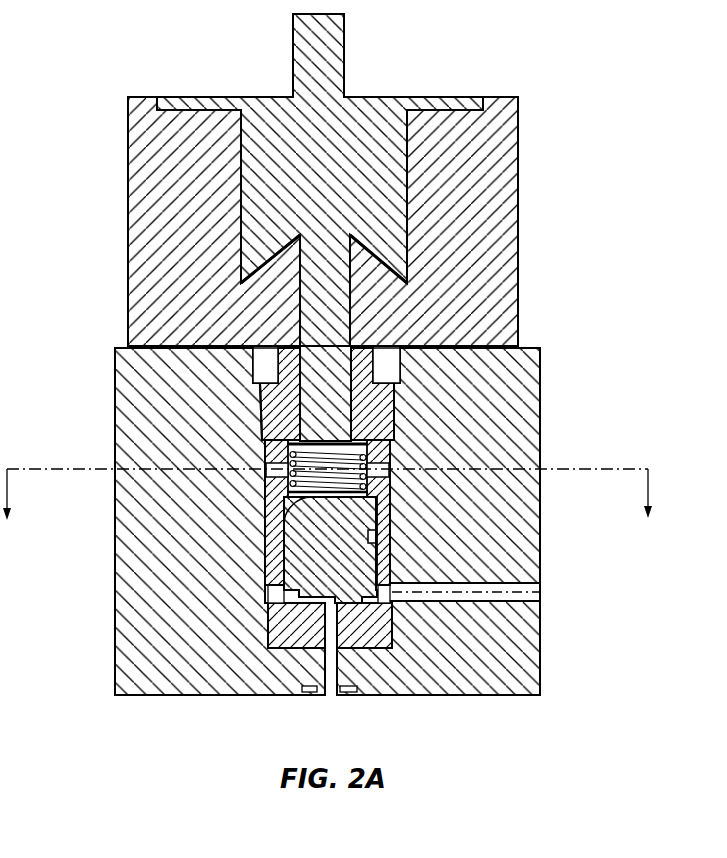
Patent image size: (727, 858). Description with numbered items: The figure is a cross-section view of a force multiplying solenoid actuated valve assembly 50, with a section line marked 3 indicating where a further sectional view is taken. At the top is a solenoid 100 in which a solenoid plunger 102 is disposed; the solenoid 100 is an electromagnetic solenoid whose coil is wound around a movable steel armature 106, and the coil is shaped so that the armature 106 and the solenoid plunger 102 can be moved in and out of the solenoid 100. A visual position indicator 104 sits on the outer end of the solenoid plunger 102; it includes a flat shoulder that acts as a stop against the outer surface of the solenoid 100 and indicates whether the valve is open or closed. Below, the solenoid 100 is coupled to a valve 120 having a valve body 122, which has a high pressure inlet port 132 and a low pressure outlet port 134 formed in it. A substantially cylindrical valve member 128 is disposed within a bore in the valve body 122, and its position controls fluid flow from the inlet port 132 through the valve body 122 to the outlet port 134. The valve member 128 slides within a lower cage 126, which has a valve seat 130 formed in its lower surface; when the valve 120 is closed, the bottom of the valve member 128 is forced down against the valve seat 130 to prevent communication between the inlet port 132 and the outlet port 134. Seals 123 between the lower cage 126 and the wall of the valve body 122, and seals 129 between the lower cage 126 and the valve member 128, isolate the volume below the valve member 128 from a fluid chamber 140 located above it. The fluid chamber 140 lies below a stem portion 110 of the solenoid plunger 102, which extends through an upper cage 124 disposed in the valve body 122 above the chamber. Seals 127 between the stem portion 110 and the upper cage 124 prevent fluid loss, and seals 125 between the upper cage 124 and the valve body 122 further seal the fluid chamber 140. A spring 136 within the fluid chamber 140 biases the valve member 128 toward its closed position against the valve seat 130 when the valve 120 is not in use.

The solenoid actuated valve assembly 50 is at (338, 377).
The solenoid 100 is at (373, 227).
The solenoid plunger 102 is at (390, 205).
The visual position indicator 104 is at (203, 97).
The armature 106 is at (407, 257).
The stem portion 110 is at (372, 430).
The valve 120 is at (338, 547).
The valve body 122 is at (542, 392).
The seals 123 is at (268, 502).
The upper cage 124 is at (268, 412).
The seals 125 is at (268, 448).
The lower cage 126 is at (265, 628).
The seals 127 is at (252, 361).
The valve member 128 is at (377, 507).
The seals 129 is at (372, 541).
The valve seat 130 is at (296, 628).
The high pressure inlet port 132 is at (331, 694).
The low pressure outlet port 134 is at (542, 596).
The spring 136 is at (268, 514).
The fluid chamber 140 is at (387, 458).
The section line 3- 3 is at (329, 509).